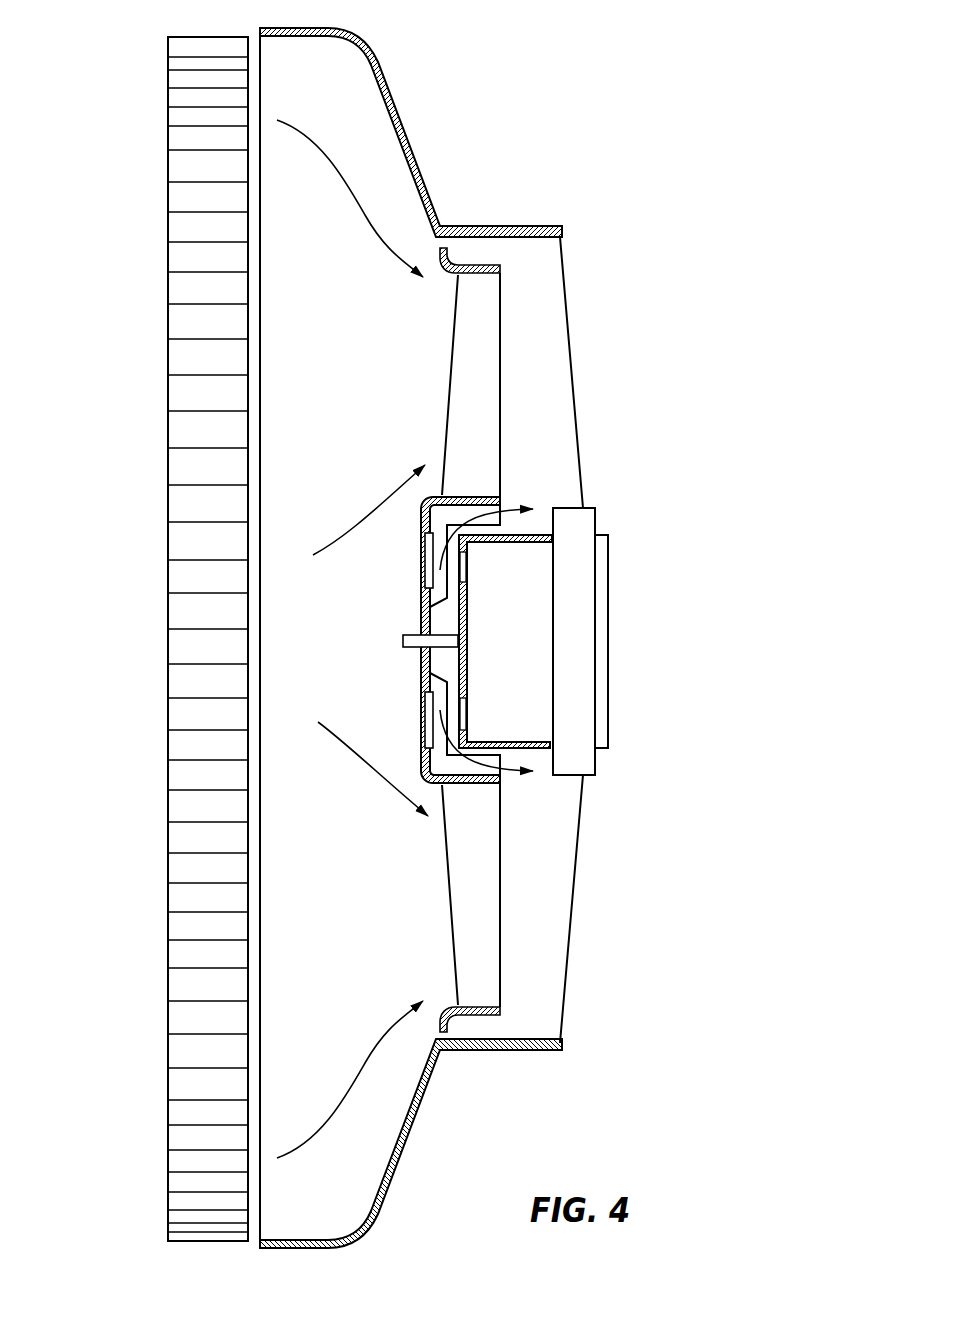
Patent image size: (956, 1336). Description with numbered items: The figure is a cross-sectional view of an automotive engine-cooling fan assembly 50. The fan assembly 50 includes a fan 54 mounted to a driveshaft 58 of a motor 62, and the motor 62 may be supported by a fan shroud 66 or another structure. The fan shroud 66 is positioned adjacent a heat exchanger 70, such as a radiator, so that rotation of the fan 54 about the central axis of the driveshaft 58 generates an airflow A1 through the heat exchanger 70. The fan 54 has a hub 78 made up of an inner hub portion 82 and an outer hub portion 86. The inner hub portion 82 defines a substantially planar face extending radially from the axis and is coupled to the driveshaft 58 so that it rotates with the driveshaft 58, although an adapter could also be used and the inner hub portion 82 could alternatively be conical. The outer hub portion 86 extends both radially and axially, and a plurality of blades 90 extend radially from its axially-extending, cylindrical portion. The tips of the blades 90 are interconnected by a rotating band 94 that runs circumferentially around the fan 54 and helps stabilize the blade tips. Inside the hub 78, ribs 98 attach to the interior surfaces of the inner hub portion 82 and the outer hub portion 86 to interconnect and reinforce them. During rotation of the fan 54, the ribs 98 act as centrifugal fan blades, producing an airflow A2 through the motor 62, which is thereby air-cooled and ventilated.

The fan assembly 50 is at (375, 627).
The fan 54 is at (530, 352).
The driveshaft 58 is at (403, 641).
The motor 62 is at (532, 543).
The fan shroud 66 is at (372, 70).
The heat exchanger 70 is at (180, 168).
The hub 78 is at (453, 807).
The inner hub portion 82 is at (422, 668).
The outer hub portion 86 is at (474, 495).
The blades 90 is at (467, 352).
The rotating band 94 is at (452, 258).
The ribs 98 is at (438, 514).
The airflow A1 is at (368, 227).
The airflow A2 is at (478, 572).